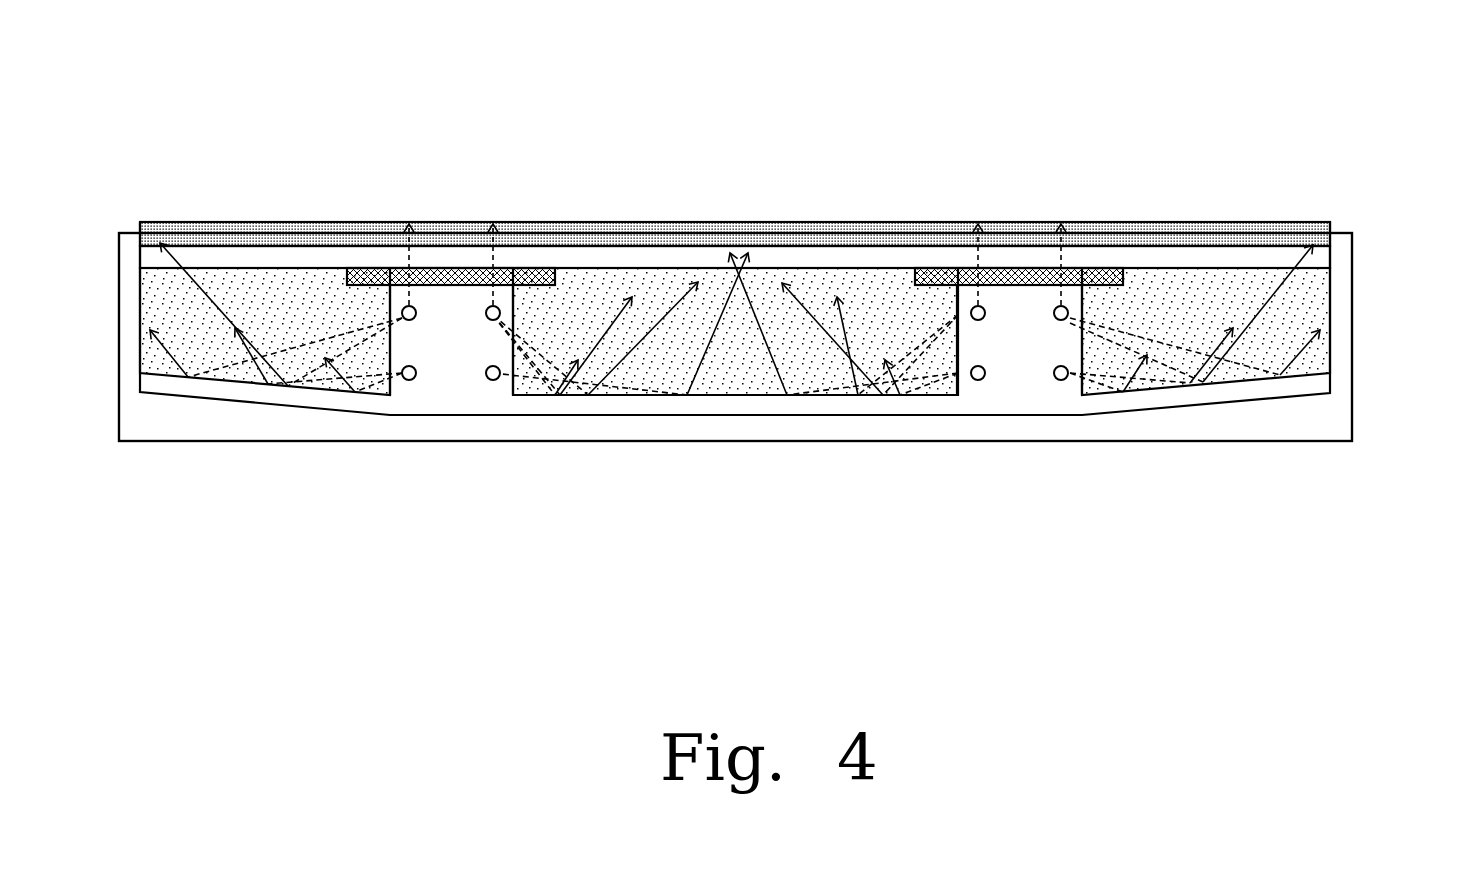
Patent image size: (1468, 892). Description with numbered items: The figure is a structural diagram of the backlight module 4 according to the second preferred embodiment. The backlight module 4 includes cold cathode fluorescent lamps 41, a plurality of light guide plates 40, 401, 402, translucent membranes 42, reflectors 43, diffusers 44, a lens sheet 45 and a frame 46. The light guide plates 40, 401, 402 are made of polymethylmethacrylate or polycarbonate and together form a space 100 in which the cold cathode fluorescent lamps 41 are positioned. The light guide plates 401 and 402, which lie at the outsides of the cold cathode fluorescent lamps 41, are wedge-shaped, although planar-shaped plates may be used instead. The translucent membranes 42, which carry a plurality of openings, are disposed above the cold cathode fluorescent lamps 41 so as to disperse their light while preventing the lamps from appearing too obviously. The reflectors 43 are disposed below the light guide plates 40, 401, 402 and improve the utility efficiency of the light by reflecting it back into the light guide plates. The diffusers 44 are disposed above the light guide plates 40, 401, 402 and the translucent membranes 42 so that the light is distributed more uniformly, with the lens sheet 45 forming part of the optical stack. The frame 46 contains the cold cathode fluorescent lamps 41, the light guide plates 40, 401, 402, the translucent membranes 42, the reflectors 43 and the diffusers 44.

The backlight module 4 is at (275, 90).
The light guide plate 40 is at (655, 288).
The light guide plate 401 is at (150, 288).
The light guide plate 402 is at (1285, 290).
The cold cathode fluorescent lamps 41 is at (409, 381).
The translucent membranes 42 is at (1037, 285).
The reflectors 43 is at (1235, 392).
The diffusers 44 is at (1212, 259).
The lens sheet 45 is at (1320, 226).
The frame 46 is at (743, 425).
The space 100 is at (445, 298).